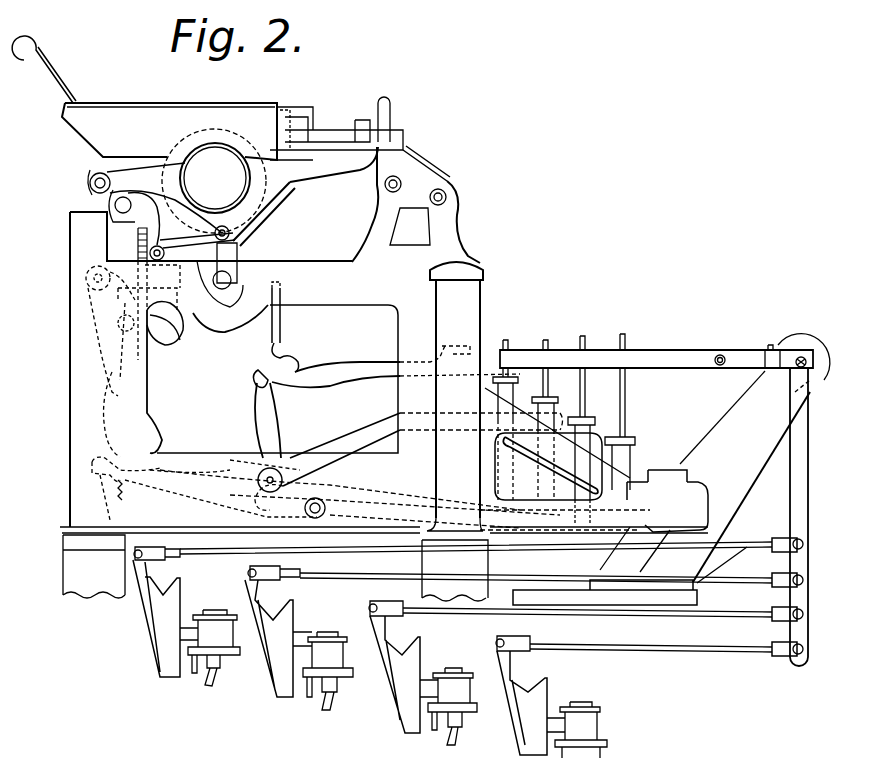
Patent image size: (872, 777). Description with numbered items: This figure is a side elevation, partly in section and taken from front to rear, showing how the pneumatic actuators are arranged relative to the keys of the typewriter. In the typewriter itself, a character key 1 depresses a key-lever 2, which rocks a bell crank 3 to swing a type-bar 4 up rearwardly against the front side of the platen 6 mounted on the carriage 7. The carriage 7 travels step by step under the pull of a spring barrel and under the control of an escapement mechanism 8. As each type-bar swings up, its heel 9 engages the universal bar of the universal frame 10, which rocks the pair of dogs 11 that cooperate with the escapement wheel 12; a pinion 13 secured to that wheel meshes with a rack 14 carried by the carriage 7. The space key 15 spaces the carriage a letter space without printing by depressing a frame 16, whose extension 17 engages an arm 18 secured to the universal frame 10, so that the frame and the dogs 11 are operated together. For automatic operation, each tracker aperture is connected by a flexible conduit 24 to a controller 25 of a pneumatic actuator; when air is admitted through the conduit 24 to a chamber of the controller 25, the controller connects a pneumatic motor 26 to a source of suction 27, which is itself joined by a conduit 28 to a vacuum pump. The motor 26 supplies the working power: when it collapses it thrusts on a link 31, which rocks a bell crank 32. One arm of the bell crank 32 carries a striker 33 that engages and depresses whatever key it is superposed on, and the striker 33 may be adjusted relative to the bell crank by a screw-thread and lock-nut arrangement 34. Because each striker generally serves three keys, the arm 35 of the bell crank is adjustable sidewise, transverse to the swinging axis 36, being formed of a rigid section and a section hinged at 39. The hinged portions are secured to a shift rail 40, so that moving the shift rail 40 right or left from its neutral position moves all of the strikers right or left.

The character key 1 is at (513, 380).
The key-lever 2 is at (372, 426).
The bell crank 3 is at (273, 428).
The type-bar 4 is at (360, 366).
The platen 6 is at (262, 207).
The carriage 7 is at (169, 131).
The escapement mechanism 8 is at (138, 267).
The heel 9 is at (292, 357).
The universal frame 10 is at (282, 318).
The dogs 11 is at (168, 340).
The escapement wheel 12 is at (108, 303).
The pinion 13 is at (170, 306).
The rack 14 is at (162, 250).
The space key 15 is at (672, 465).
The frame 16 is at (396, 503).
The extension 17 is at (160, 487).
The arm 18 is at (168, 430).
The conduit 24 is at (328, 700).
The controller 25 is at (453, 691).
The pneumatic motor 26 is at (420, 656).
The source of suction 27 is at (477, 712).
The conduit 28 is at (430, 732).
The link 31 is at (749, 550).
The bell crank 32 is at (802, 532).
The striker 33 is at (572, 412).
The screw-thread and lock-nut arrangement 34 is at (617, 348).
The arm 35 is at (672, 350).
The axis 36 is at (808, 362).
The hinge 39 is at (773, 348).
The shift rail 40 is at (722, 357).